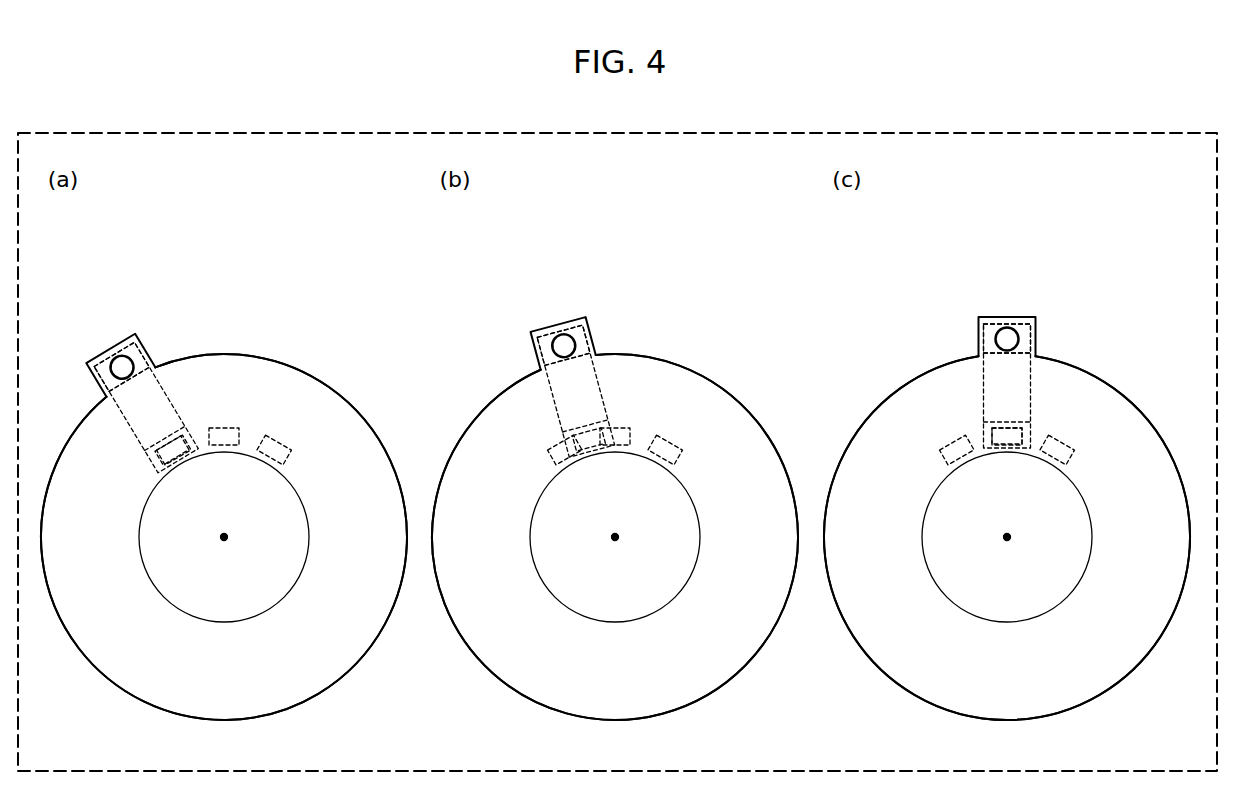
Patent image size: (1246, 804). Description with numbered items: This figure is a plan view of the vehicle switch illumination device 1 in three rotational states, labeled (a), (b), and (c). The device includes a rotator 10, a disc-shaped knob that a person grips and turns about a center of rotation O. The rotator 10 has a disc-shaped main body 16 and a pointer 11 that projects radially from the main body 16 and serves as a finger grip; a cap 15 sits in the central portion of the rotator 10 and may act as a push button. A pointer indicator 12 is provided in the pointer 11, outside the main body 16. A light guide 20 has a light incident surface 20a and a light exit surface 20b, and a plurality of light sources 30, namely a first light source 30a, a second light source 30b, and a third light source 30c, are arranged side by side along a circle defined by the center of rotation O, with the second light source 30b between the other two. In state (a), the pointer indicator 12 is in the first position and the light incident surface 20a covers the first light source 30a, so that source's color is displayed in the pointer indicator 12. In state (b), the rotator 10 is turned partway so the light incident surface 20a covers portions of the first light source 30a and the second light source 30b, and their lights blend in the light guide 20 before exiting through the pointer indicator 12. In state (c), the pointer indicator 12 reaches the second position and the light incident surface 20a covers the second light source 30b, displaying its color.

The vehicle switch illumination device 1 is at (299, 304).
The rotator 10 is at (254, 353).
The pointer 11 is at (117, 342).
The pointer indicator 12 is at (137, 355).
The cap 15 is at (175, 611).
The main body 16 is at (283, 378).
The light guide 20 is at (180, 413).
The light incident surface 20a is at (153, 457).
The light exit surface 20b is at (100, 373).
The light sources 30 is at (609, 476).
The first light source 30a is at (166, 476).
The second light source 30b is at (222, 449).
The third light source 30c is at (281, 476).
The center of rotation O is at (221, 540).